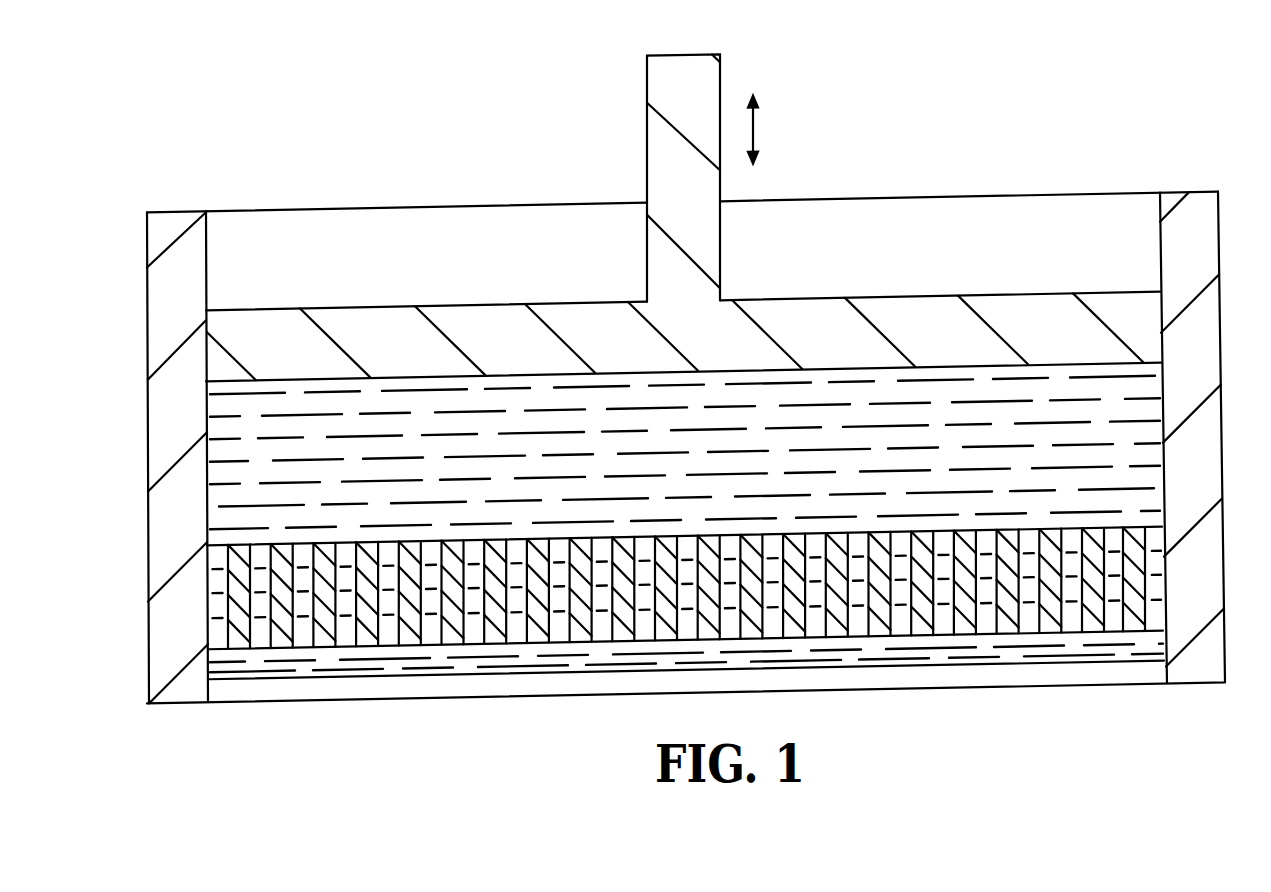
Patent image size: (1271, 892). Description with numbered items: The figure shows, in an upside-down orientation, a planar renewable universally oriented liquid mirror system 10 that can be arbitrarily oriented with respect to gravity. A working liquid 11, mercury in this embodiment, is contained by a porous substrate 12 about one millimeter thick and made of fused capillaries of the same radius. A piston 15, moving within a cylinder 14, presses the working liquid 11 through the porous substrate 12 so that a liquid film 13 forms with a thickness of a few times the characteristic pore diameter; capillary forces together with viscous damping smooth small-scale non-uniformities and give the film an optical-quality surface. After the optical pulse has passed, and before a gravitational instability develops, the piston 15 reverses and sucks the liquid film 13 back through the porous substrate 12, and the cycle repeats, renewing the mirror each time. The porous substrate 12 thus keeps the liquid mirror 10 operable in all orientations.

The planar renewable universally oriented liquid mirror system 10 is at (392, 175).
The working liquid 11 is at (1147, 452).
The porous substrate 12 is at (1015, 614).
The liquid film 13 is at (465, 656).
The cylinder 14 is at (148, 667).
The piston 15 is at (1005, 298).